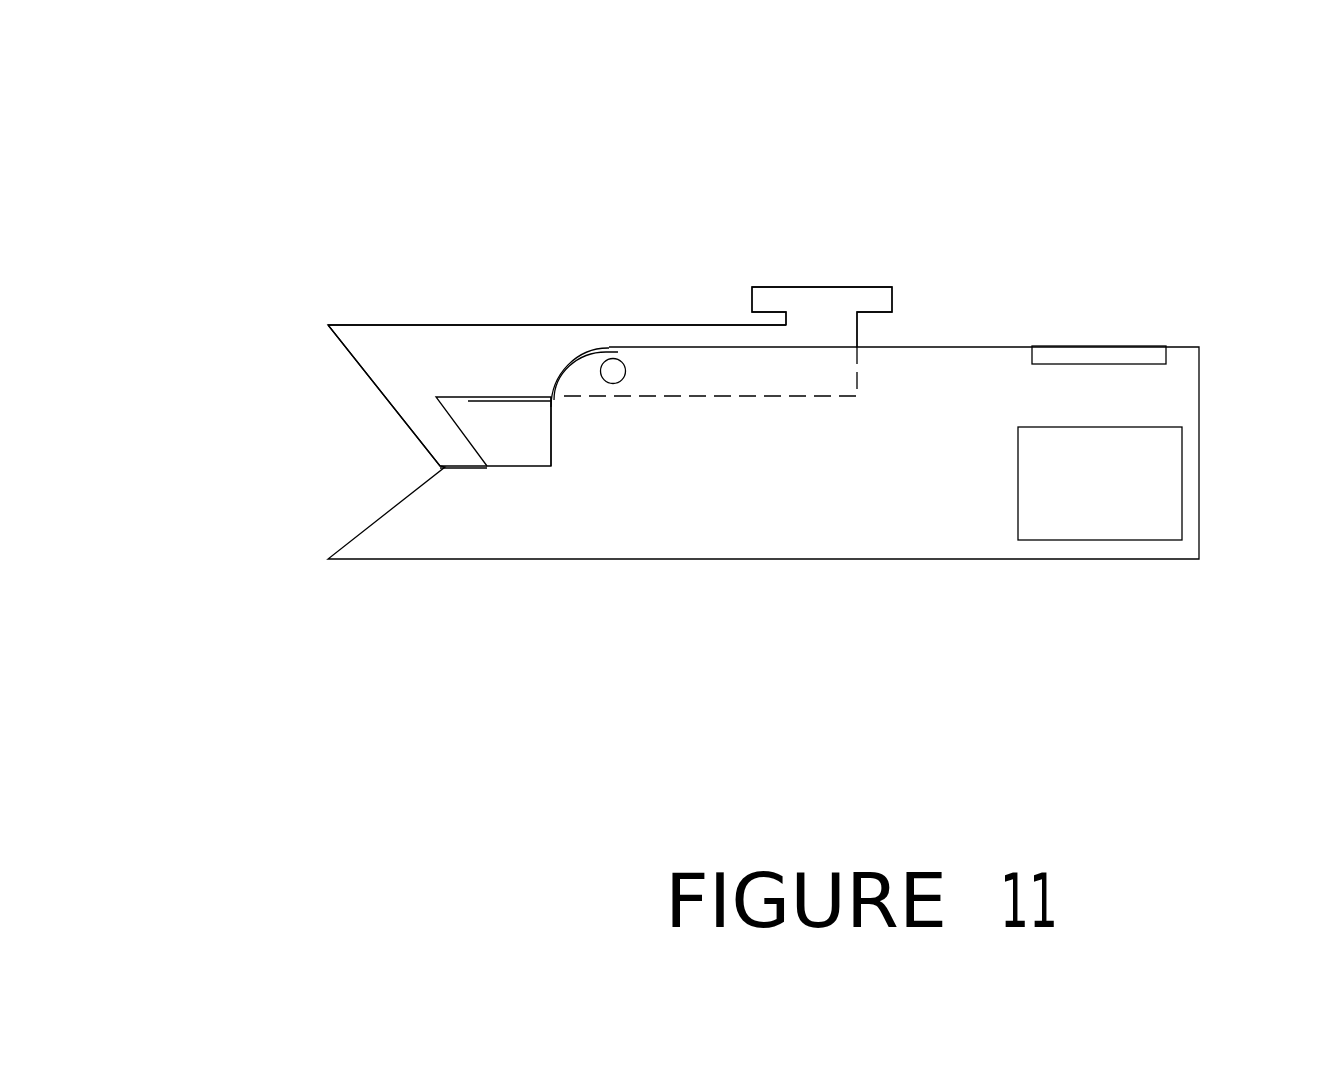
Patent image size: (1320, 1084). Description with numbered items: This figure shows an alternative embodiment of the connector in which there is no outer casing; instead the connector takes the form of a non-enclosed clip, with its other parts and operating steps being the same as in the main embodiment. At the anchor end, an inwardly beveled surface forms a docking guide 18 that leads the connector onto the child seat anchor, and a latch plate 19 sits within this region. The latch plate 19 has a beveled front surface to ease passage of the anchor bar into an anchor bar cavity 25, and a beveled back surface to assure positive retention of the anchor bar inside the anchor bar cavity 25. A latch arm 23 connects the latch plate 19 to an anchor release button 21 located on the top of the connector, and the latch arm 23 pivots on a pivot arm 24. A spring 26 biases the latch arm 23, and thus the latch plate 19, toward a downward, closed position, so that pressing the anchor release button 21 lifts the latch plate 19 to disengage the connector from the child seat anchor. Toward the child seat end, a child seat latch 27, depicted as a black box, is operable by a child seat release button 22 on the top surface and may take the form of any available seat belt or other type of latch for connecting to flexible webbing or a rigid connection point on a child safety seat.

The docking guide 18 is at (345, 520).
The latch plate 19 is at (427, 418).
The anchor release button 21 is at (837, 260).
The child seat release button 22 is at (1100, 327).
The latch arm 23 is at (470, 360).
The pivot arm 24 is at (611, 368).
The anchor bar cavity 25 is at (503, 427).
The spring 26 is at (557, 414).
The child seat latch 27 is at (1150, 471).